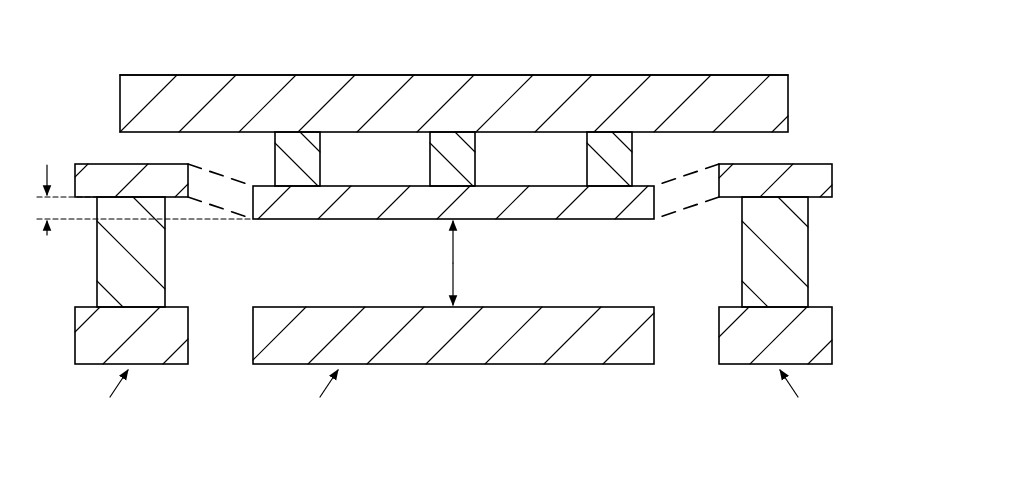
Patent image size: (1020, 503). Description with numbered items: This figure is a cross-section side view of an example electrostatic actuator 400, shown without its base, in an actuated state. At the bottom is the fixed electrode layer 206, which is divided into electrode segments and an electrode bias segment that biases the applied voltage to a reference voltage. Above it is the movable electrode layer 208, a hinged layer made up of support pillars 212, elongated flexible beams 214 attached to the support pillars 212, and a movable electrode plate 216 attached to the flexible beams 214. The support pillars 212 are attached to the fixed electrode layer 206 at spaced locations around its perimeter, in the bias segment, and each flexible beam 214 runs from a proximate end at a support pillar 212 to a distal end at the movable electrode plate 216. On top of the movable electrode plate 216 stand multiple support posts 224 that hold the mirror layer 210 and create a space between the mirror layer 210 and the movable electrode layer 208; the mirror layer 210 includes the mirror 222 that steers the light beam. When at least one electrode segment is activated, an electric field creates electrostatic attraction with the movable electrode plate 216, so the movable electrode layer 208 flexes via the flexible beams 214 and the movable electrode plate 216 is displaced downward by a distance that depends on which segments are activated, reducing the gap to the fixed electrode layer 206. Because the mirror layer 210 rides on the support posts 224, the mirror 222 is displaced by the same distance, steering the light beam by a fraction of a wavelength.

The electrostatic actuator 400 is at (272, 52).
The mirror layer 210 is at (800, 100).
The mirror 222 is at (128, 90).
The support posts 224 is at (283, 165).
The movable electrode layer 208 is at (845, 180).
The support pillars 212 is at (107, 265).
The flexible beams 214 is at (216, 208).
The movable electrode plate 216 is at (352, 220).
The fixed electrode layer 206 is at (846, 336).